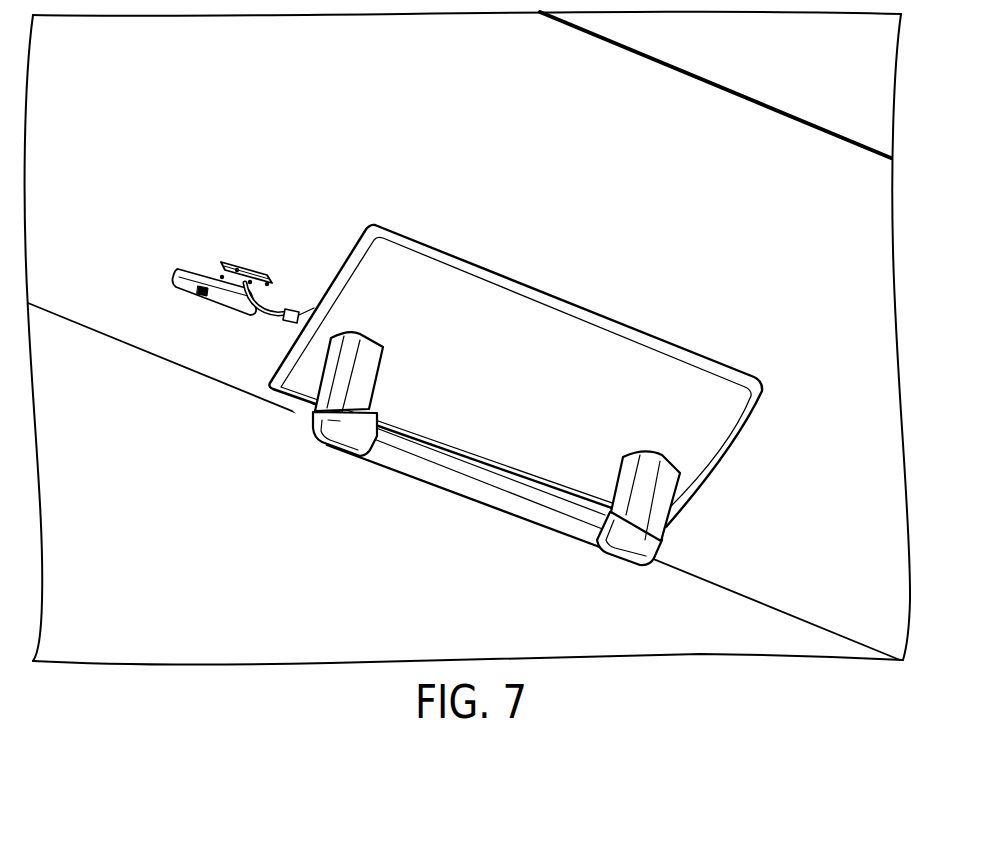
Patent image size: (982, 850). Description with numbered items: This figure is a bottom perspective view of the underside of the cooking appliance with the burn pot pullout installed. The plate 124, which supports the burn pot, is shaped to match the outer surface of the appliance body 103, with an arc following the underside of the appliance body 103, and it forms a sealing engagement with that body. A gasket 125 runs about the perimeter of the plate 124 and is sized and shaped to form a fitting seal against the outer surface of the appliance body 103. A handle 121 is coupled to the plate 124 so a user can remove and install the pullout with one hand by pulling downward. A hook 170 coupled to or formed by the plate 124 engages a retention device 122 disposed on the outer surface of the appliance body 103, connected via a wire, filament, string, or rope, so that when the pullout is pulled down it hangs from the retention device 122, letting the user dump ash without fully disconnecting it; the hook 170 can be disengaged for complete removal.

The appliance body 103 is at (176, 132).
The handle 121 is at (630, 555).
The retention device 122 is at (190, 267).
The plate 124 is at (628, 357).
The gasket 125 is at (437, 248).
The hook 170 is at (307, 298).